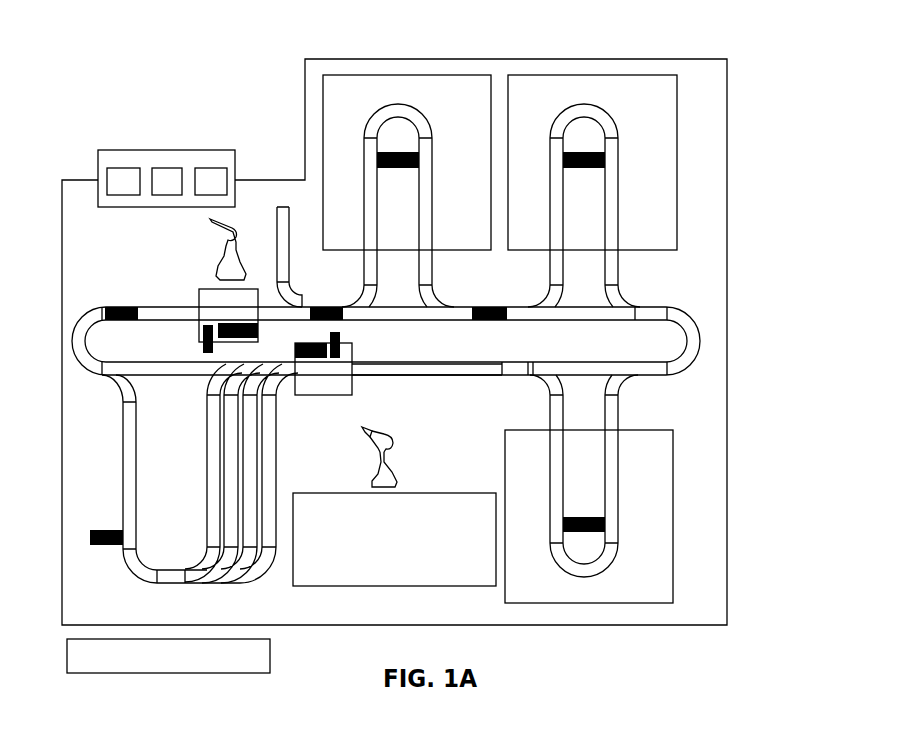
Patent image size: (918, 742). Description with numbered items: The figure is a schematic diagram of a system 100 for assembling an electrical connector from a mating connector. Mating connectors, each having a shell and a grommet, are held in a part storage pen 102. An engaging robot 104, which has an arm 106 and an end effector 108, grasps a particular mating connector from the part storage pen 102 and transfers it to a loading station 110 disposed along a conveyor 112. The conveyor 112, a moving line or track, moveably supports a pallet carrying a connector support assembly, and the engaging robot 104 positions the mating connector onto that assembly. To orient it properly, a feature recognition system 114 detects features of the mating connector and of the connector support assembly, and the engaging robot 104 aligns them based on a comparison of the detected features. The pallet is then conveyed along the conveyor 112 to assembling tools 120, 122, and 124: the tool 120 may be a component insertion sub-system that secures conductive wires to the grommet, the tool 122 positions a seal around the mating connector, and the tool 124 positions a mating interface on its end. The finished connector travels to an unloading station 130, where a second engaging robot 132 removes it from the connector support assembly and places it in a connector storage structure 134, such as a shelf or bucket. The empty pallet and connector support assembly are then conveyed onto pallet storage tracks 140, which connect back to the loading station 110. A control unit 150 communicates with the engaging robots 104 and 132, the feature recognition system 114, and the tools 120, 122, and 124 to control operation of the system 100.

The system 100 is at (107, 110).
The part storage pen 102 is at (422, 492).
The engaging robot 104 is at (386, 455).
The arm 106 is at (378, 434).
The end effector 108 is at (362, 430).
The loading station 110 is at (352, 358).
The conveyor 112 is at (353, 377).
The feature recognition system 114 is at (341, 339).
The tool 120 is at (710, 467).
The tool 122 is at (657, 102).
The tool 124 is at (465, 82).
The unloading station 130 is at (200, 288).
The engaging robot 132 is at (235, 227).
The connector storage structure 134 is at (185, 157).
The pallet storage tracks 140 is at (207, 493).
The control unit 150 is at (67, 656).